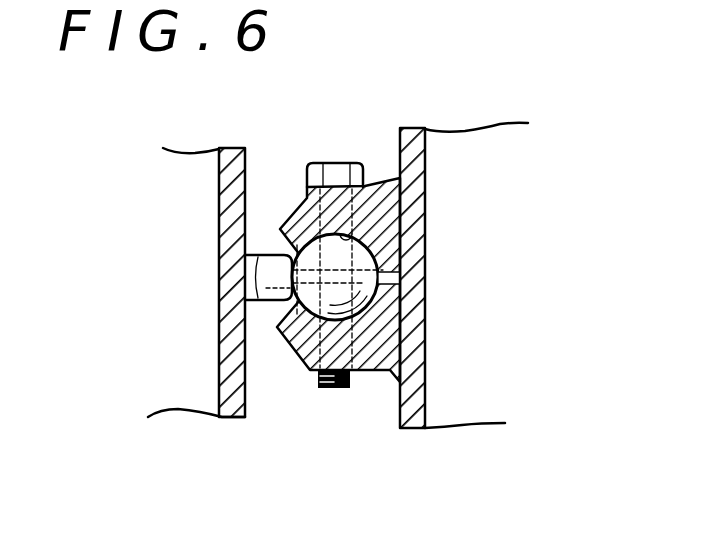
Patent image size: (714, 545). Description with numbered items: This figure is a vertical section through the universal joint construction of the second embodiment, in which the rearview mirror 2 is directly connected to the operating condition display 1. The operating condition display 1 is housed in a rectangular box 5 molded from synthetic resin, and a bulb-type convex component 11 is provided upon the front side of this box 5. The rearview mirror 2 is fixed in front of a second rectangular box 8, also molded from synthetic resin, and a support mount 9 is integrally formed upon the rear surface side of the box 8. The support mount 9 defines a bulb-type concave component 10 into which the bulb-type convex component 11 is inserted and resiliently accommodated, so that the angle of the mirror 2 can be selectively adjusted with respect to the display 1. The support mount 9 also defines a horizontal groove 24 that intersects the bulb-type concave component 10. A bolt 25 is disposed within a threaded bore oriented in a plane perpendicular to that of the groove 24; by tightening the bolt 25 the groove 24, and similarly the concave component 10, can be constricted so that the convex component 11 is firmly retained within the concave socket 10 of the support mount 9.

The operating condition display 1 is at (178, 387).
The rearview mirror 2 is at (450, 398).
The box 5 is at (231, 400).
The box 8 is at (410, 420).
The support mount 9 is at (375, 362).
The bulb-type concave component 10 is at (347, 226).
The bulb-type convex component 11 is at (298, 343).
The groove 24 is at (400, 279).
The bolt 25 is at (320, 177).